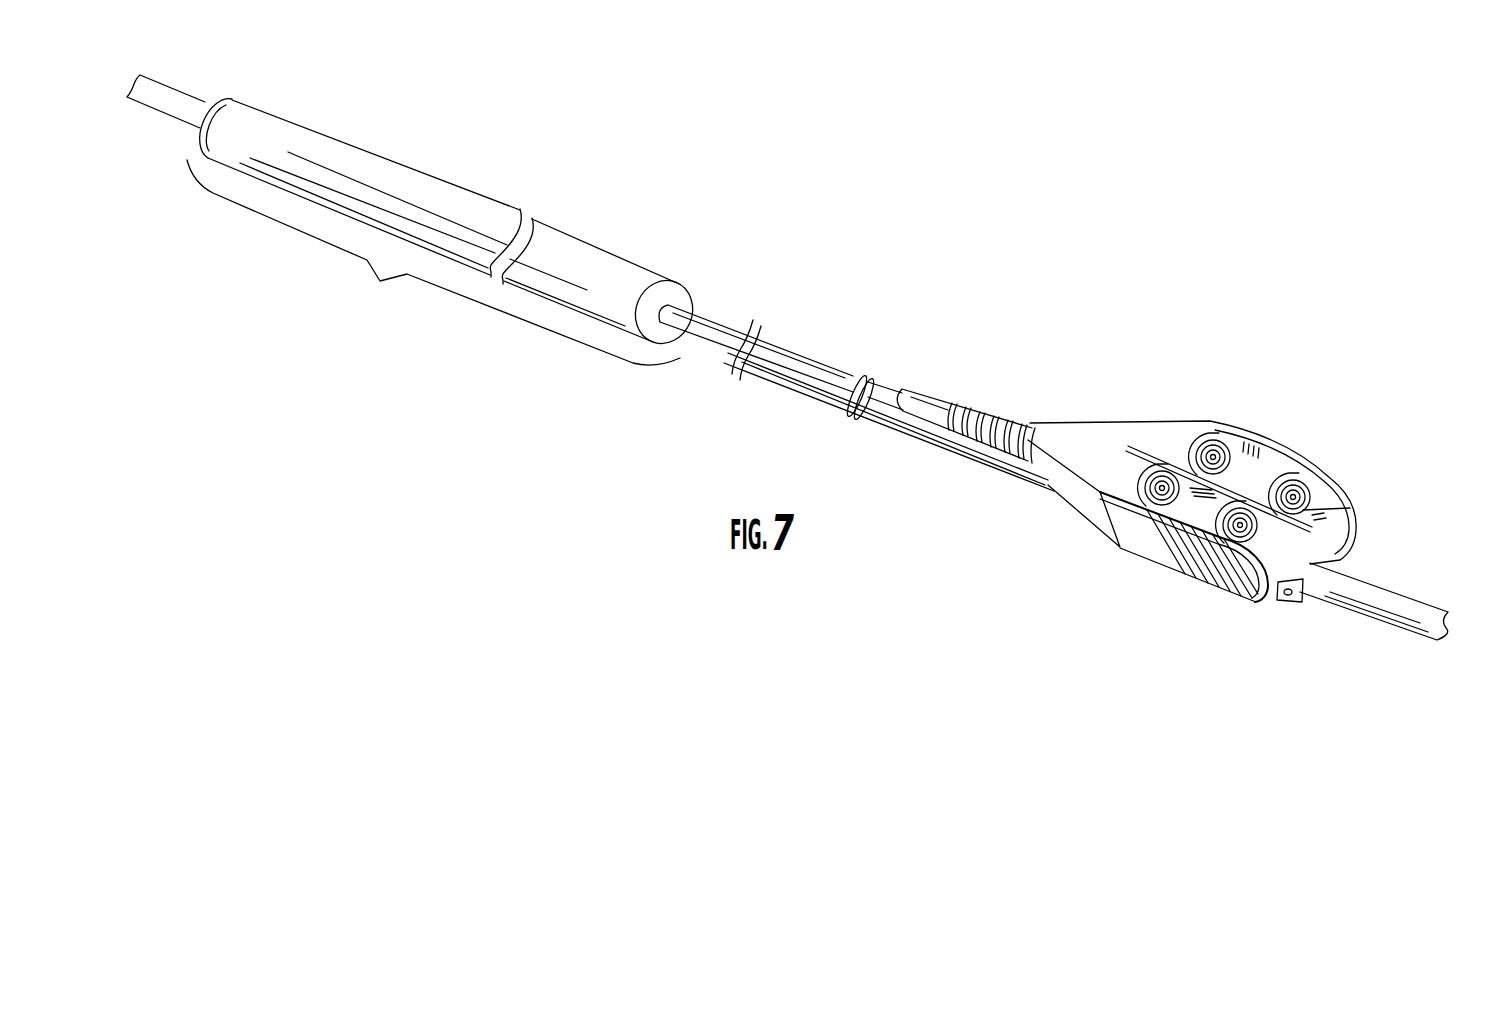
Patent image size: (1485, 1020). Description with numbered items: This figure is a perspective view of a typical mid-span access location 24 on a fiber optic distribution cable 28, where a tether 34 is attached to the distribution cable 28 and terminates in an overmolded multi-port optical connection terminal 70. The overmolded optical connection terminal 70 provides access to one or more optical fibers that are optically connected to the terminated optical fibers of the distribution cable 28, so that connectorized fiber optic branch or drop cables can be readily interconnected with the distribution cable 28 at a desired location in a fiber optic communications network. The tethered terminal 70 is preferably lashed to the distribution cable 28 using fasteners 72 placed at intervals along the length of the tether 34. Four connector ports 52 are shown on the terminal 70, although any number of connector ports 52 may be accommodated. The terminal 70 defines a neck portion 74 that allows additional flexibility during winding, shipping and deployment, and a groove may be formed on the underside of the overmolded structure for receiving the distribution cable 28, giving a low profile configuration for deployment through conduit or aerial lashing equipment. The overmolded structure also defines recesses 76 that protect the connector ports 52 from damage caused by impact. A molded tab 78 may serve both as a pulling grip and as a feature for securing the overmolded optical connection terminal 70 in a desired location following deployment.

The mid-span access location 24 is at (414, 220).
The distribution cable 28 is at (874, 421).
The tether 34 is at (891, 386).
The connector ports 52 is at (1218, 438).
The overmolded multi-port optical connection terminal 70 is at (1162, 421).
The fasteners 72 is at (851, 373).
The neck portion 74 is at (970, 408).
The recesses 76 is at (1270, 549).
The molded tab 78 is at (1291, 603).